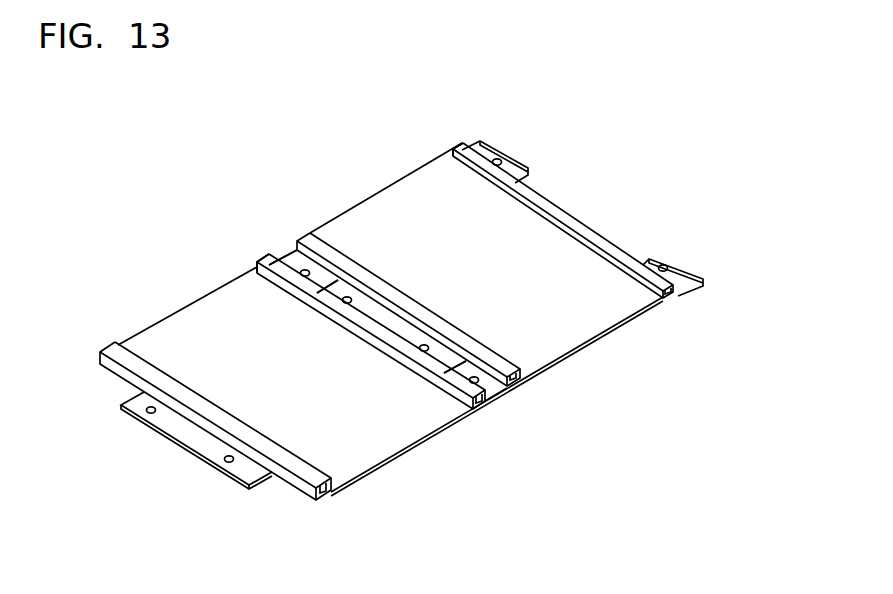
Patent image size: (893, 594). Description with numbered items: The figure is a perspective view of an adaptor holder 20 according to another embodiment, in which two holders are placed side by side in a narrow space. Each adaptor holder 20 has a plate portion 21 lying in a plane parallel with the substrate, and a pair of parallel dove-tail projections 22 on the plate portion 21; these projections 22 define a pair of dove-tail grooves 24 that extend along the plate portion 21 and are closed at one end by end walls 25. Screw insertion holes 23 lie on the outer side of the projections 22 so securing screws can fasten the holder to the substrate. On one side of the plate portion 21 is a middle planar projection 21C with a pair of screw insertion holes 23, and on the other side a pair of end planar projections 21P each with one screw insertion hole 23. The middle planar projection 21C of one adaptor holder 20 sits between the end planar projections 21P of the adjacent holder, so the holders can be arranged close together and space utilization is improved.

The adaptor holder 20 is at (199, 232).
The plate portion 21 is at (394, 450).
The middle planar projection 21C is at (164, 426).
The end planar projection 21P is at (334, 280).
The dove-tail projection 22 is at (204, 396).
The screw insertion hole 23 is at (301, 270).
The dove-tail groove 24 is at (333, 501).
The end wall 25 is at (256, 264).